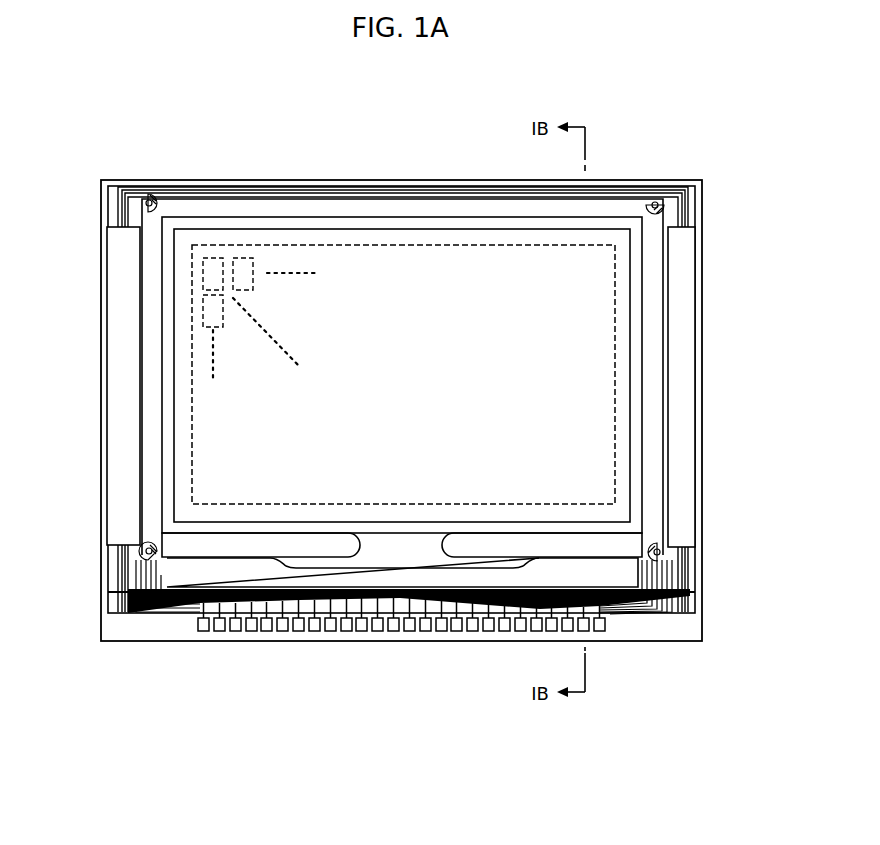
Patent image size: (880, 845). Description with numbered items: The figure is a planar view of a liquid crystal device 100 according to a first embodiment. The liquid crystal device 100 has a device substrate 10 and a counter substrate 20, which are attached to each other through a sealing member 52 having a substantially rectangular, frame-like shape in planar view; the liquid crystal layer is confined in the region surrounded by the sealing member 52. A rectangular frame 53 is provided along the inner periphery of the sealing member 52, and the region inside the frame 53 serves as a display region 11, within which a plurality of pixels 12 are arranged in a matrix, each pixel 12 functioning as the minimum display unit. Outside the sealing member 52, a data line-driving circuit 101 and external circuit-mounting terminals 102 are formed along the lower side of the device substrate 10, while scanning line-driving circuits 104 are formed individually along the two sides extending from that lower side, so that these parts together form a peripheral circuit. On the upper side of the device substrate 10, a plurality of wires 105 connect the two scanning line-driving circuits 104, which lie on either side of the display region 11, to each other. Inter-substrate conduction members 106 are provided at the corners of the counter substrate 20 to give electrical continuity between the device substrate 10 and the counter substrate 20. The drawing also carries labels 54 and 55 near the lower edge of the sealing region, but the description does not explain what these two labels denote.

The liquid crystal device 100 is at (546, 82).
The device substrate 10 is at (318, 180).
The counter substrate 20 is at (377, 200).
The wires 105 is at (213, 190).
The inter-substrate conduction members 106 is at (147, 192).
The scanning line-driving circuits 104 is at (120, 382).
The frame 53 is at (623, 305).
The sealing member 52 is at (647, 335).
The display region 11 is at (497, 247).
The pixels 12 is at (253, 280).
The seal 54 is at (400, 552).
The inlet 55 is at (445, 560).
The data line-driving circuit 101 is at (207, 575).
The external circuit-mounting terminals 102 is at (262, 630).